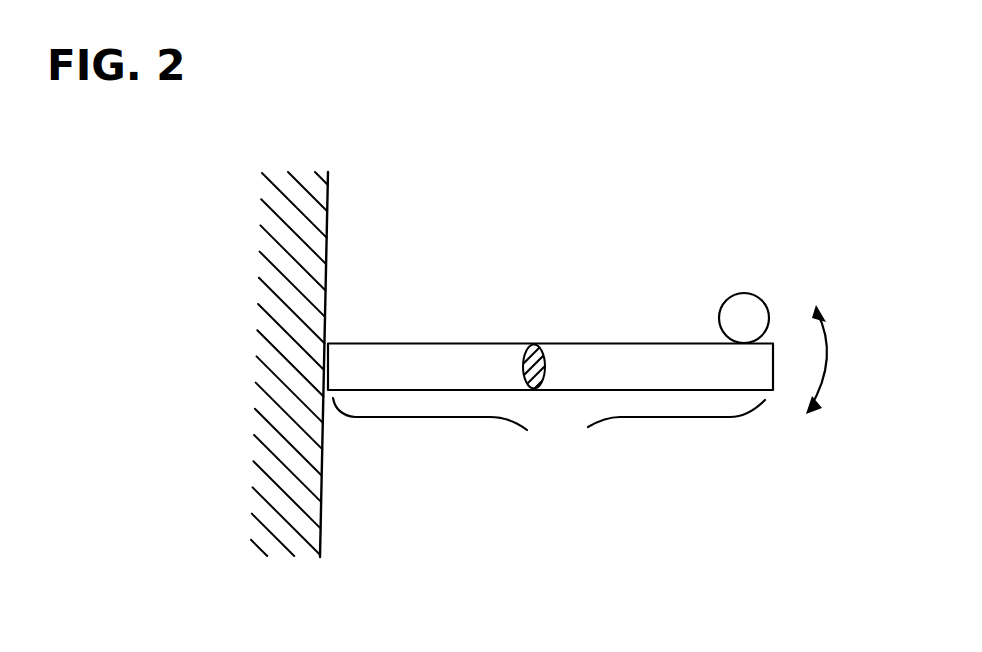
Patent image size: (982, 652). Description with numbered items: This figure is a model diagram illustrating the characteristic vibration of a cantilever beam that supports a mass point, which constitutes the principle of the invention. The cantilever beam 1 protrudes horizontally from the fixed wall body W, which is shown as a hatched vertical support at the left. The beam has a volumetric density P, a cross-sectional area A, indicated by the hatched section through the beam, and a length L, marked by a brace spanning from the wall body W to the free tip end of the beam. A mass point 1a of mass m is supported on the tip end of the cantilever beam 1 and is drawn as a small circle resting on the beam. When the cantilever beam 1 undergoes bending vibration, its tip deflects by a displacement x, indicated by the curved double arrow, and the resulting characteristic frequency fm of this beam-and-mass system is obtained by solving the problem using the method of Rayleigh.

The cantilever beam 1 is at (625, 362).
The mass point 1a is at (746, 294).
The cross-sectional area A is at (538, 343).
The volumetric density P is at (421, 372).
The wall body W is at (242, 364).
The length L is at (549, 427).
The characteristic frequency fm is at (849, 374).